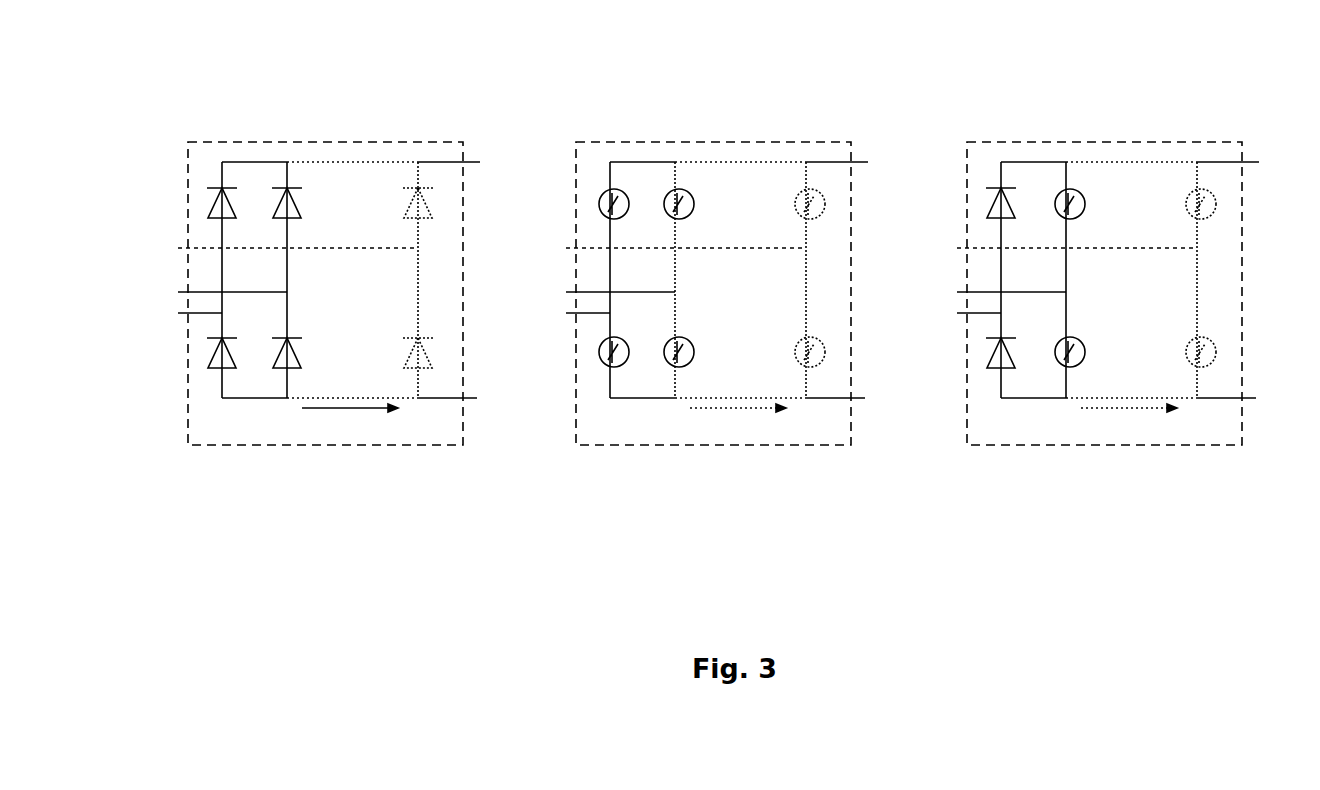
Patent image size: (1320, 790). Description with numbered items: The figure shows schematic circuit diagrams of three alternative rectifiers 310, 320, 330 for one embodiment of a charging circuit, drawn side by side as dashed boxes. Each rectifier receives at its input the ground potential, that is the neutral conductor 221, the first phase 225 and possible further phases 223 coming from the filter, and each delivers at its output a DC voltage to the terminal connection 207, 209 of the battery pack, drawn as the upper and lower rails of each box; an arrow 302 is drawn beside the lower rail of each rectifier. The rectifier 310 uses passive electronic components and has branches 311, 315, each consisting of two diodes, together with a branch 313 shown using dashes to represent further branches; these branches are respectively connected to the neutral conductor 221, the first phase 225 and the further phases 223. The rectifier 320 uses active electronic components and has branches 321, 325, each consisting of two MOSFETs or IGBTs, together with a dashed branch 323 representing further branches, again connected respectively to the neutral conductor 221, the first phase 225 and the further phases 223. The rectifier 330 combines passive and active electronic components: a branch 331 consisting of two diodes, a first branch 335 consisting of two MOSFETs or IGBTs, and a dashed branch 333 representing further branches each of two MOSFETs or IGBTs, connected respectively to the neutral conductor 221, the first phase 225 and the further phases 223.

The terminal connection 209 is at (478, 152).
The terminal connection 207 is at (478, 403).
The further phases 223 is at (180, 237).
The first phase 225 is at (180, 283).
The neutral conductor 221 is at (172, 318).
The current flow direction 302 is at (358, 413).
The rectifier 310 is at (431, 437).
The rectifier 320 is at (713, 337).
The rectifier 330 is at (1104, 346).
The branch 311 is at (225, 186).
The branch 315 is at (288, 186).
The branch 313 is at (410, 188).
The branch 321 is at (629, 145).
The branch 325 is at (697, 145).
The branch 323 is at (790, 145).
The branch 331 is at (1017, 144).
The first branch 335 is at (1088, 145).
The branch 333 is at (1179, 145).